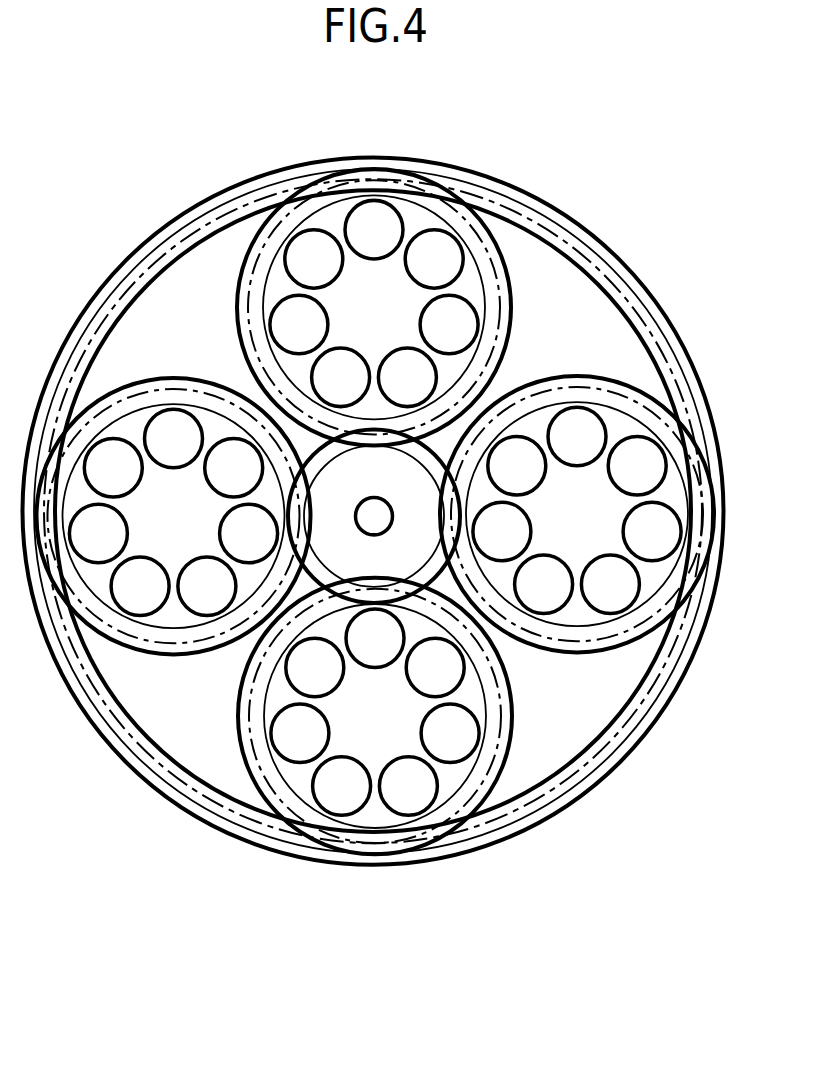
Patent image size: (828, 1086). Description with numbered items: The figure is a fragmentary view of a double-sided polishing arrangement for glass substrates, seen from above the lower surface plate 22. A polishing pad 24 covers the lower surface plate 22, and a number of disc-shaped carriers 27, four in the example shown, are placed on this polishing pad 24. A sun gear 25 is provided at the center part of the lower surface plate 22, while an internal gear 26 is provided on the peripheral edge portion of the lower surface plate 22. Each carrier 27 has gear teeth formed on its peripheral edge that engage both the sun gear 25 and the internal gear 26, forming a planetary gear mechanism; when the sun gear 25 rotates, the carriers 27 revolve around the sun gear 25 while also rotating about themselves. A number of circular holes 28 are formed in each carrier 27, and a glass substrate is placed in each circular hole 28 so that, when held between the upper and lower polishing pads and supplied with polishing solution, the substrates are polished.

The lower surface plate 22 is at (623, 258).
The polishing pad 24 is at (607, 336).
The sun gear 25 is at (403, 479).
The internal gear 26 is at (150, 290).
The carrier 27 is at (175, 658).
The circular hole 28 is at (375, 507).